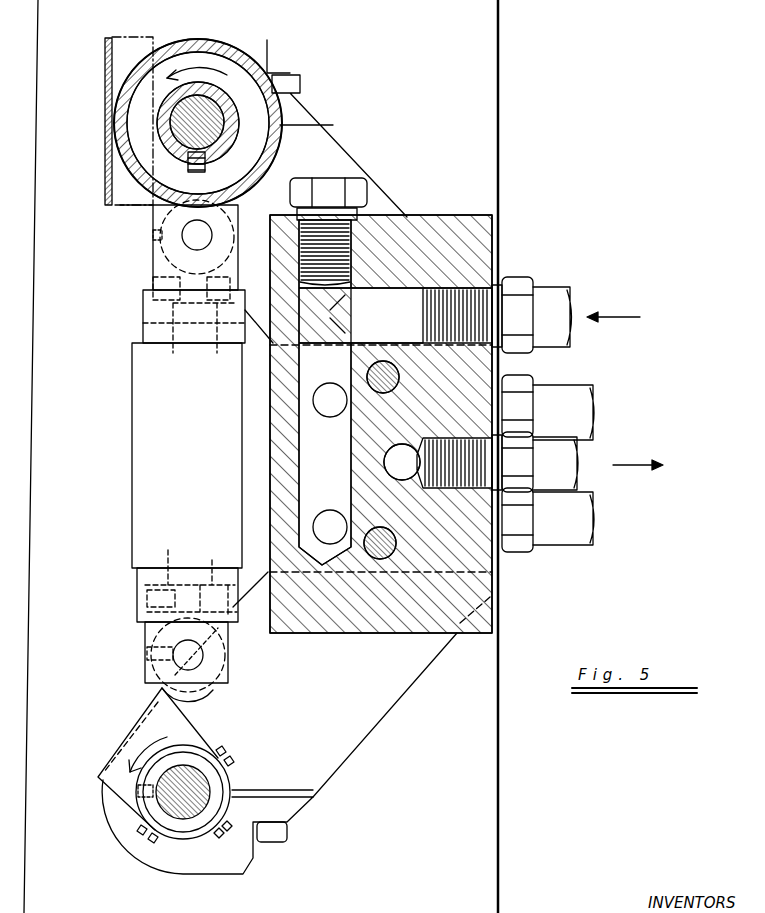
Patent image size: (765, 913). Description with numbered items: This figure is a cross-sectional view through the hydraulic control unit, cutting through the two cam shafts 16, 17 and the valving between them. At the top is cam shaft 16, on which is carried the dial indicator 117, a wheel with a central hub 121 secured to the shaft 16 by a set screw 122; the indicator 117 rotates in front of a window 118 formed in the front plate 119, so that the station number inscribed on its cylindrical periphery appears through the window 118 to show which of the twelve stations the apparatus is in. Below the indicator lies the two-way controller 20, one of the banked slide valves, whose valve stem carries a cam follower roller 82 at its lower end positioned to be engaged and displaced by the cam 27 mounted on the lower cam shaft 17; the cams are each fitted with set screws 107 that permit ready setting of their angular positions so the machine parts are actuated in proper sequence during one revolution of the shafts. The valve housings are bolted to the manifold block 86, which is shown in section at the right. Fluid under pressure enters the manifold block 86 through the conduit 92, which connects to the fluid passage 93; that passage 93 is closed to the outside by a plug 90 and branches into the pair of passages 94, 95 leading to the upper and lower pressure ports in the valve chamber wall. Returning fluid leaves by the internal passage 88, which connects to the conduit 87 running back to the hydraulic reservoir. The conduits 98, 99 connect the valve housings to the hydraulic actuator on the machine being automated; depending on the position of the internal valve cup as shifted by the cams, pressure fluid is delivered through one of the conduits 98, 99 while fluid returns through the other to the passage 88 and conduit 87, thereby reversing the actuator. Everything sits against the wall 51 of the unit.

The wall 51 is at (410, 64).
The dial indicator 117 is at (200, 42).
The front plate 119 is at (105, 62).
The window 118 is at (105, 137).
The cam shaft 16 is at (197, 125).
The central hub 121 is at (207, 147).
The set screw 122 is at (196, 163).
The two-way controller 20 is at (199, 467).
The manifold block 86 is at (486, 250).
The fluid passage 93 is at (403, 300).
The plug 90 is at (340, 185).
The passage 94 is at (332, 407).
The internal passage 88 is at (390, 460).
The passage 95 is at (330, 518).
The conduit 92 is at (557, 293).
The conduit 98 is at (555, 400).
The conduit 87 is at (550, 472).
The conduit 99 is at (558, 527).
The cam follower roller 82 is at (202, 690).
The cam 27 is at (153, 703).
The cam shaft 17 is at (185, 790).
The set screws 107 is at (224, 752).